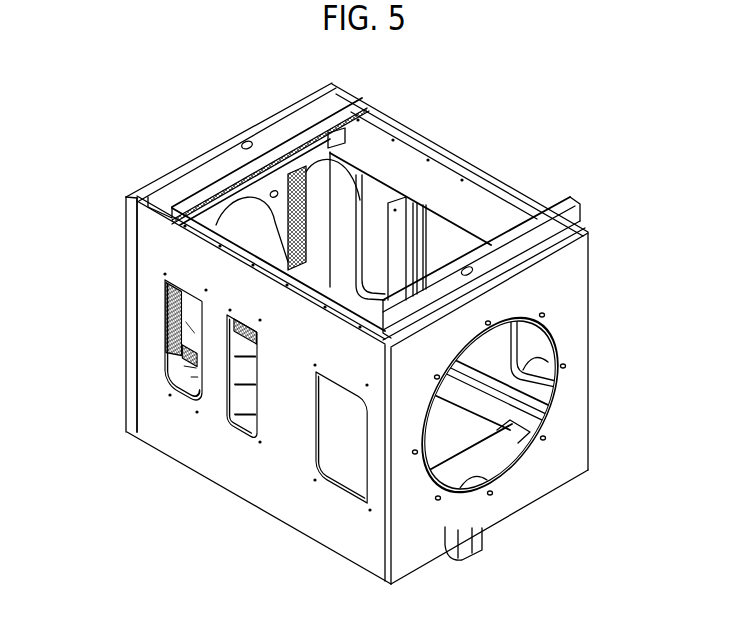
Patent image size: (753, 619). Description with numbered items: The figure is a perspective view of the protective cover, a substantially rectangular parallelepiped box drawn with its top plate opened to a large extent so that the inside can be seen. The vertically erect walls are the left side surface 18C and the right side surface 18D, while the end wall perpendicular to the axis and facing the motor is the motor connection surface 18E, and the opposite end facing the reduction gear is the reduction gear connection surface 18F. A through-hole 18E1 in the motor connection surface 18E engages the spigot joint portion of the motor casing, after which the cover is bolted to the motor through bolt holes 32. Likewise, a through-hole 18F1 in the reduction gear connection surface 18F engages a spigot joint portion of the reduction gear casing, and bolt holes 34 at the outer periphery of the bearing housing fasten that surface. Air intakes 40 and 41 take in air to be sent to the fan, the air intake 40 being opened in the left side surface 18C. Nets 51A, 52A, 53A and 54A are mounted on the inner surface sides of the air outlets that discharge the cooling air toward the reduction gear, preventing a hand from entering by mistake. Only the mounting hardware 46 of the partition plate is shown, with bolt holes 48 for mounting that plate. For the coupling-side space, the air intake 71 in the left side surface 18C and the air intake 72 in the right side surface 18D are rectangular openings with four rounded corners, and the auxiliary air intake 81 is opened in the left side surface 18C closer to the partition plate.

The reduction gear connection surface 18F is at (306, 121).
The net 51A is at (273, 191).
The net 52A is at (318, 168).
The bolt holes 34 is at (262, 205).
The through-hole 18F1 is at (205, 200).
The air intake 41 is at (370, 190).
The mounting hardware 46 is at (380, 228).
The bolt holes 48 is at (395, 250).
The net 53A is at (165, 316).
The right side surface 18D is at (597, 290).
The bolt holes 32 is at (566, 364).
The air intake 40 is at (180, 380).
The auxiliary air intake 81 is at (240, 412).
The air intake 72 is at (525, 360).
The net 54A is at (182, 397).
The left side surface 18C is at (273, 470).
The air intake 71 is at (367, 487).
The motor connection surface 18E is at (535, 474).
The through-hole 18E1 is at (490, 510).